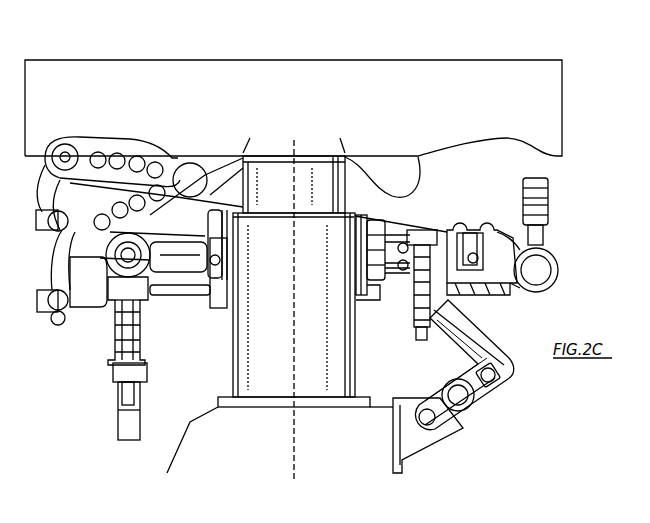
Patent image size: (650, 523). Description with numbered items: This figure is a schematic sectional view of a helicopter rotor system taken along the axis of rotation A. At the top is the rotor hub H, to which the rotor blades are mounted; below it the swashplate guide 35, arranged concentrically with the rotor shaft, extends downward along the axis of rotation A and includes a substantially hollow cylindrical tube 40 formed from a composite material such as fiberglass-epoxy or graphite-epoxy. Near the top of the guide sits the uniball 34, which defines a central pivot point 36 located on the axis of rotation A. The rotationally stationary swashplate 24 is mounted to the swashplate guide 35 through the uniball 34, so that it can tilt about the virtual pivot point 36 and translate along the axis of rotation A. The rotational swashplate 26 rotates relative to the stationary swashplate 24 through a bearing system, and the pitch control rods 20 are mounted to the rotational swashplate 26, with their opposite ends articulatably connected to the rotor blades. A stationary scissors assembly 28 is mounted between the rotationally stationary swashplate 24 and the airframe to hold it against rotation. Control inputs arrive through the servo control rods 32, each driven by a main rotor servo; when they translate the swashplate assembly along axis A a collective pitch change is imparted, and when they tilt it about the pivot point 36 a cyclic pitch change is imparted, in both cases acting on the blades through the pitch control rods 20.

The rotor hub H is at (290, 70).
The axis of rotation A is at (297, 470).
The pitch control rod 20 is at (548, 200).
The rotationally stationary swashplate 24 is at (455, 292).
The rotational swashplate 26 is at (517, 290).
The stationary scissors assembly 28 is at (502, 403).
The servo control rod 32 is at (120, 415).
The uniball 34 is at (369, 216).
The swashplate guide 35 is at (374, 376).
The central pivot point 36 is at (306, 256).
The cylindrical tube 40 is at (240, 356).